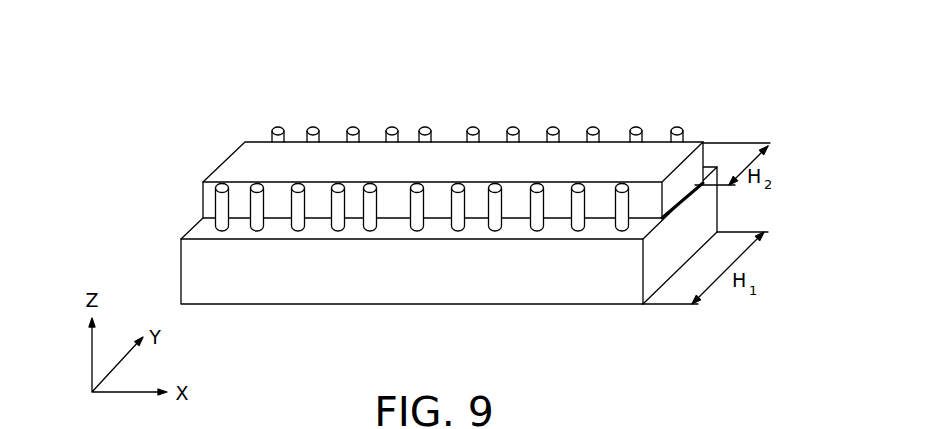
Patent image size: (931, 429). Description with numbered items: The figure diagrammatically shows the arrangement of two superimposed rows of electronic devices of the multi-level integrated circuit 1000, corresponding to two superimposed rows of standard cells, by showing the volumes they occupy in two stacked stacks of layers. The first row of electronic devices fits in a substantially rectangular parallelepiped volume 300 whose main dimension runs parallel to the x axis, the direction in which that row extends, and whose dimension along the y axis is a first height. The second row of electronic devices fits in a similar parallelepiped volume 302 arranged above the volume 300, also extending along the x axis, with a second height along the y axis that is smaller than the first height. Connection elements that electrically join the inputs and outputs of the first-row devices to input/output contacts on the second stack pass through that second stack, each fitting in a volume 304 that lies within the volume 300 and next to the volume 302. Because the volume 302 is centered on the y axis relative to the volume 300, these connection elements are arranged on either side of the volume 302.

The integrated circuit 1000 is at (459, 206).
The volume 300 is at (602, 290).
The volume 302 is at (250, 158).
The volume 304 is at (220, 204).